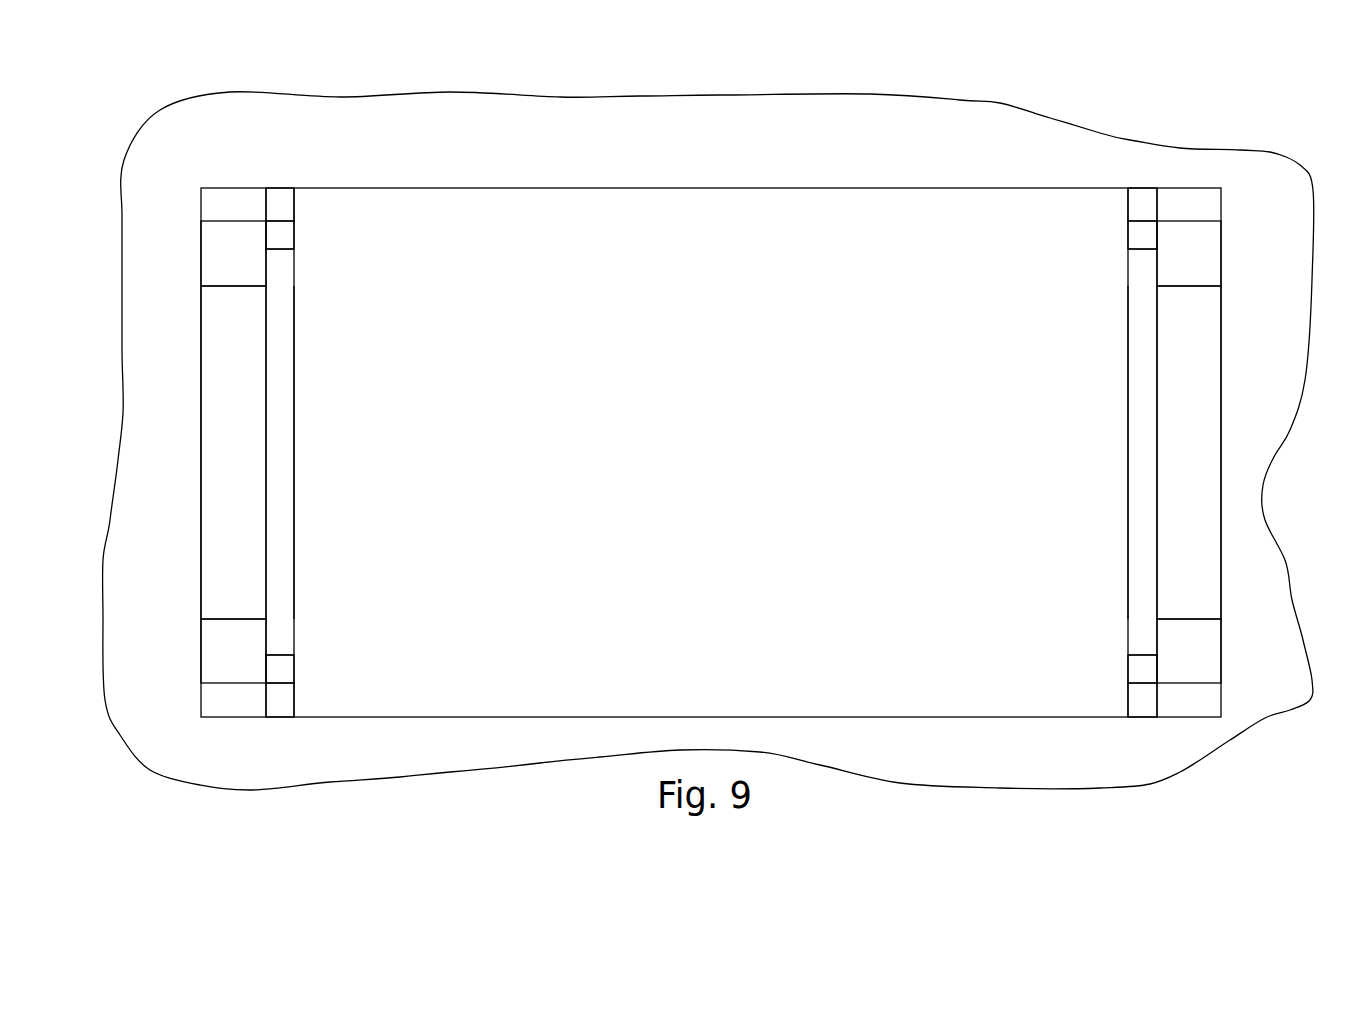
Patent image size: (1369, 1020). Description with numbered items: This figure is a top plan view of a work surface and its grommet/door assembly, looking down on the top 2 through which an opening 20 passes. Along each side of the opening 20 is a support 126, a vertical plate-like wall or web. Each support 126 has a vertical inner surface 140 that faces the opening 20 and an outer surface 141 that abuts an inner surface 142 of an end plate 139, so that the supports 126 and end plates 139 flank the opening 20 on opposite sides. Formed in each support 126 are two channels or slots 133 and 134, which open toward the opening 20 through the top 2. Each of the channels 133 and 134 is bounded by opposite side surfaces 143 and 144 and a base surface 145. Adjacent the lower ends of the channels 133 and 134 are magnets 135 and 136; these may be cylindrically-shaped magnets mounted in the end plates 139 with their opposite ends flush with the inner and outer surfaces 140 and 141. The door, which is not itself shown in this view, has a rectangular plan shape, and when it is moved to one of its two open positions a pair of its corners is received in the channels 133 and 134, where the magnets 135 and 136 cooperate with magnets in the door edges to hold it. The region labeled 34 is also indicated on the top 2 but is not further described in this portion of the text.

The top 2 is at (1063, 140).
The body panel region 34 is at (957, 152).
The opening 20 is at (695, 456).
The support 126 is at (295, 418).
The channel or slot 133 is at (290, 668).
The channel or slot 134 is at (295, 232).
The magnet 135 is at (232, 655).
The magnet 136 is at (223, 256).
The end plate 139 is at (225, 450).
The inner surface 140 is at (295, 358).
The outer surface 141 is at (270, 333).
The inner surface 142 is at (267, 565).
The side surface 143 is at (288, 246).
The side surface 144 is at (291, 222).
The base surface 145 is at (268, 240).